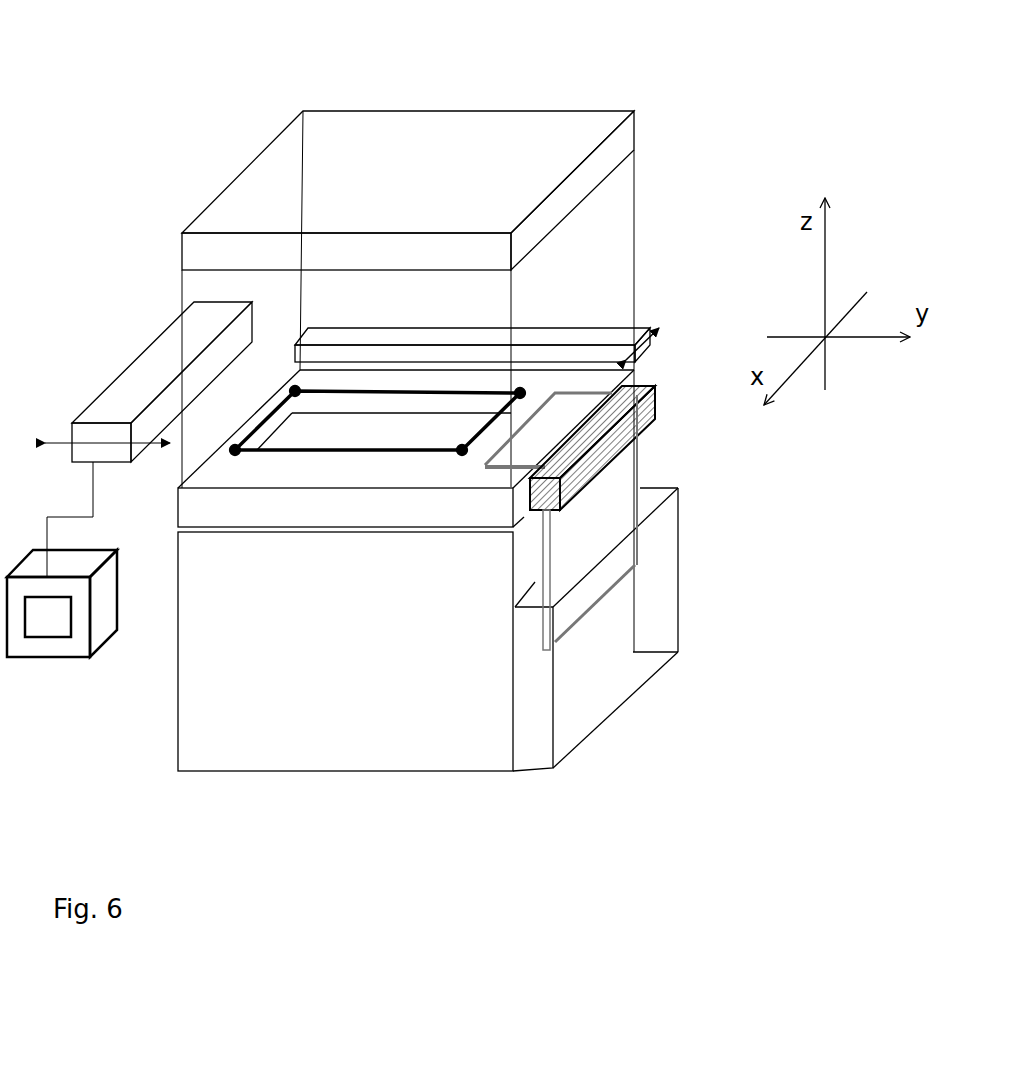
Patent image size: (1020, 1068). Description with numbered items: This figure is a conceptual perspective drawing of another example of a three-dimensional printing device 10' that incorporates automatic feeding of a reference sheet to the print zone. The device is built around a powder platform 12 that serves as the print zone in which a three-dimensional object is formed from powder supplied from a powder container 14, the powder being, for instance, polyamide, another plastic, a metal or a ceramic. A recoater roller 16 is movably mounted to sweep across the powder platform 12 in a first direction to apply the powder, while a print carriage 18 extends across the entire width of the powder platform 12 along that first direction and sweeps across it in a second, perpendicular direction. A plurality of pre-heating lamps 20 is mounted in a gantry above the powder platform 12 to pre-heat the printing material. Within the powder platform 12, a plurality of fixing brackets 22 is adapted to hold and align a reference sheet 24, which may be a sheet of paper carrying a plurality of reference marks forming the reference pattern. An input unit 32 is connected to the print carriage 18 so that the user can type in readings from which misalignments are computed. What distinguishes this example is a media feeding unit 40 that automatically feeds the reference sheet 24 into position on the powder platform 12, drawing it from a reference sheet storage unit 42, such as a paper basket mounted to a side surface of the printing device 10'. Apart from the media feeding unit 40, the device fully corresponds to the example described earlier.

The 3d printing device 10' is at (360, 329).
The powder platform 12 is at (262, 398).
The powder container 14 is at (180, 610).
The recoater roller 16 is at (590, 331).
The print carriage 18 is at (140, 347).
The pre-heating lamps 20 is at (598, 152).
The fixing brackets 22 is at (297, 390).
The reference sheet 24 is at (683, 455).
The input unit 32 is at (43, 657).
The media feeding unit 40 is at (660, 401).
The reference sheet storage unit 42 is at (680, 583).